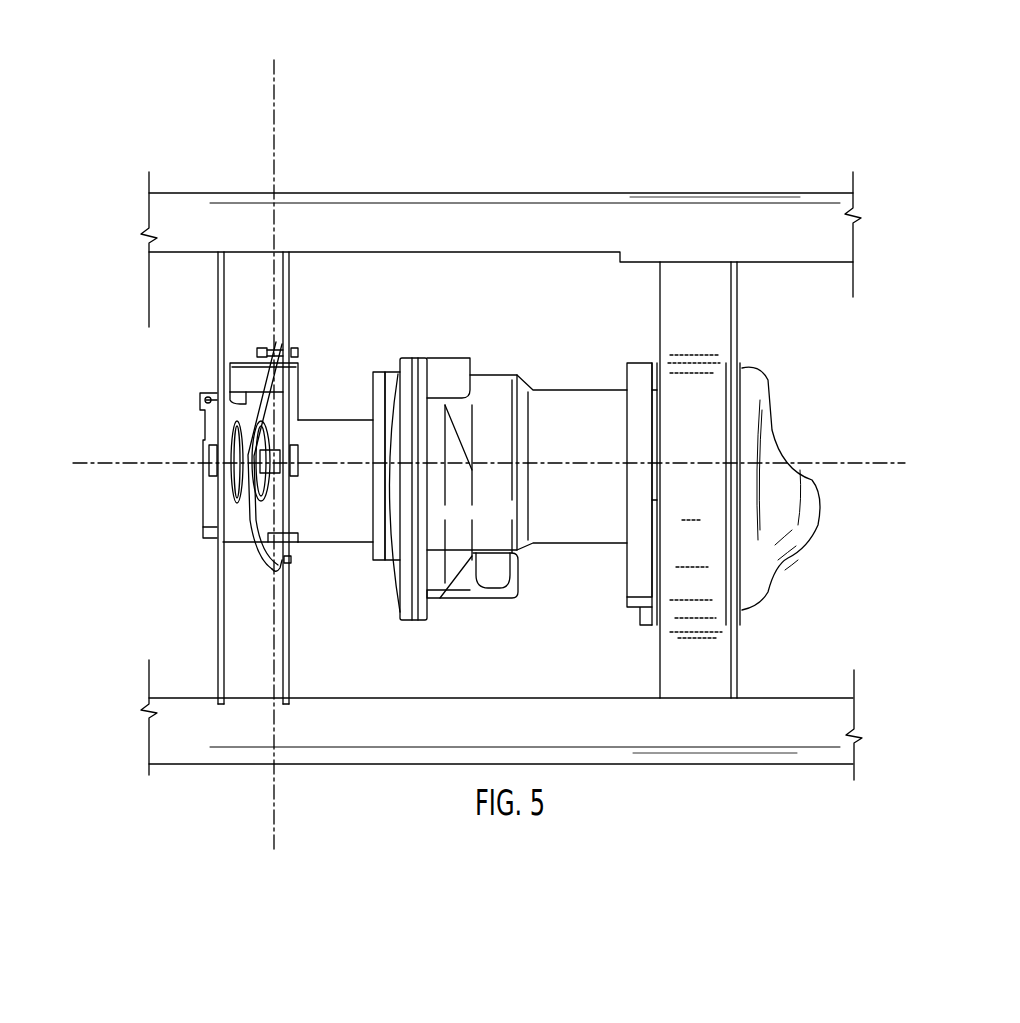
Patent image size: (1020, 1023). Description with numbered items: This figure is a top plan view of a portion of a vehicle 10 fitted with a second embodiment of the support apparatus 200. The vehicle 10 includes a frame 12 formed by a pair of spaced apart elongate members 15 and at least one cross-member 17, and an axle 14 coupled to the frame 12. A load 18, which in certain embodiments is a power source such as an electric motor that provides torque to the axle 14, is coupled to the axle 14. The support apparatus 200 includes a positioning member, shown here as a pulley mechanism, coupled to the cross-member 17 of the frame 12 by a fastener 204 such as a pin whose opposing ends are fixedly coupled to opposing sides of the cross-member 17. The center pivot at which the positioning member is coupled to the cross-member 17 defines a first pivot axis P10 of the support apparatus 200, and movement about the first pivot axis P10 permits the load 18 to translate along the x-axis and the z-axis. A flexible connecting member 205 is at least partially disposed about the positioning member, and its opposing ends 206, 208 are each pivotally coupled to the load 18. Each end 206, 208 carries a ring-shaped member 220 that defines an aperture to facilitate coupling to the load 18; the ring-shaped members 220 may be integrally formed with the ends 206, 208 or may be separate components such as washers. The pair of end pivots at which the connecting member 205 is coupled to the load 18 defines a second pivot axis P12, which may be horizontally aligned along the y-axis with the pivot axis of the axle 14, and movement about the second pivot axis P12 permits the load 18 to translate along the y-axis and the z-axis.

The vehicle 10 is at (207, 78).
The frame 12 is at (588, 185).
The axle 14 is at (705, 310).
The elongate members 15 is at (692, 224).
The cross-member 17 is at (290, 263).
The load 18 is at (546, 388).
The support apparatus 200 is at (240, 330).
The fastener 204 is at (273, 458).
The flexible connecting member 205 is at (237, 517).
The end of the connecting member 206 is at (270, 570).
The end of the connecting member 208 is at (263, 340).
The ring-shaped member 220 is at (297, 337).
The first pivot axis P10 is at (488, 462).
The second pivot axis P12 is at (276, 461).